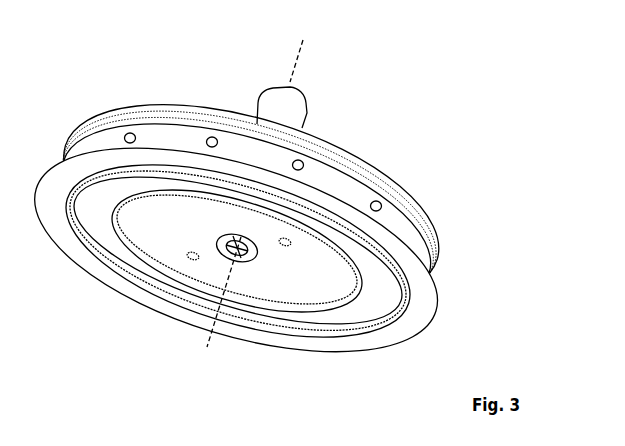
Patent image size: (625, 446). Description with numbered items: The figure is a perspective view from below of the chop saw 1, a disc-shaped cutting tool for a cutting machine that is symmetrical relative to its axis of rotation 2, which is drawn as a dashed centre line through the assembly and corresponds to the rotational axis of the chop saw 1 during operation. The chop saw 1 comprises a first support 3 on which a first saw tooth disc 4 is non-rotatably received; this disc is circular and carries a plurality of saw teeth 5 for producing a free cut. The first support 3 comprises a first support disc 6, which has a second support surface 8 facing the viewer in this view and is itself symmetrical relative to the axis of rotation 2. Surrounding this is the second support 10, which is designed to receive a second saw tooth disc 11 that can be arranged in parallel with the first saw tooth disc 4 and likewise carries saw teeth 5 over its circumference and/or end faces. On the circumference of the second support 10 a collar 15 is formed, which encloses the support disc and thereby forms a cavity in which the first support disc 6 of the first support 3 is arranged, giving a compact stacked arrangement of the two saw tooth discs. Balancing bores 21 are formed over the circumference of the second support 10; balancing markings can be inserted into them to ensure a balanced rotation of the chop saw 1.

The chop saw 1 is at (441, 109).
The axis of rotation 2 is at (290, 61).
The first support 3 is at (241, 306).
The first saw tooth disc 4 is at (121, 261).
The saw teeth 5 is at (292, 296).
The first support disc 6 is at (181, 273).
The second support surface 8 is at (262, 100).
The second support 10 is at (352, 149).
The second saw tooth disc 11 is at (86, 264).
The collar 15 is at (384, 178).
The balancing bores 21 is at (382, 204).